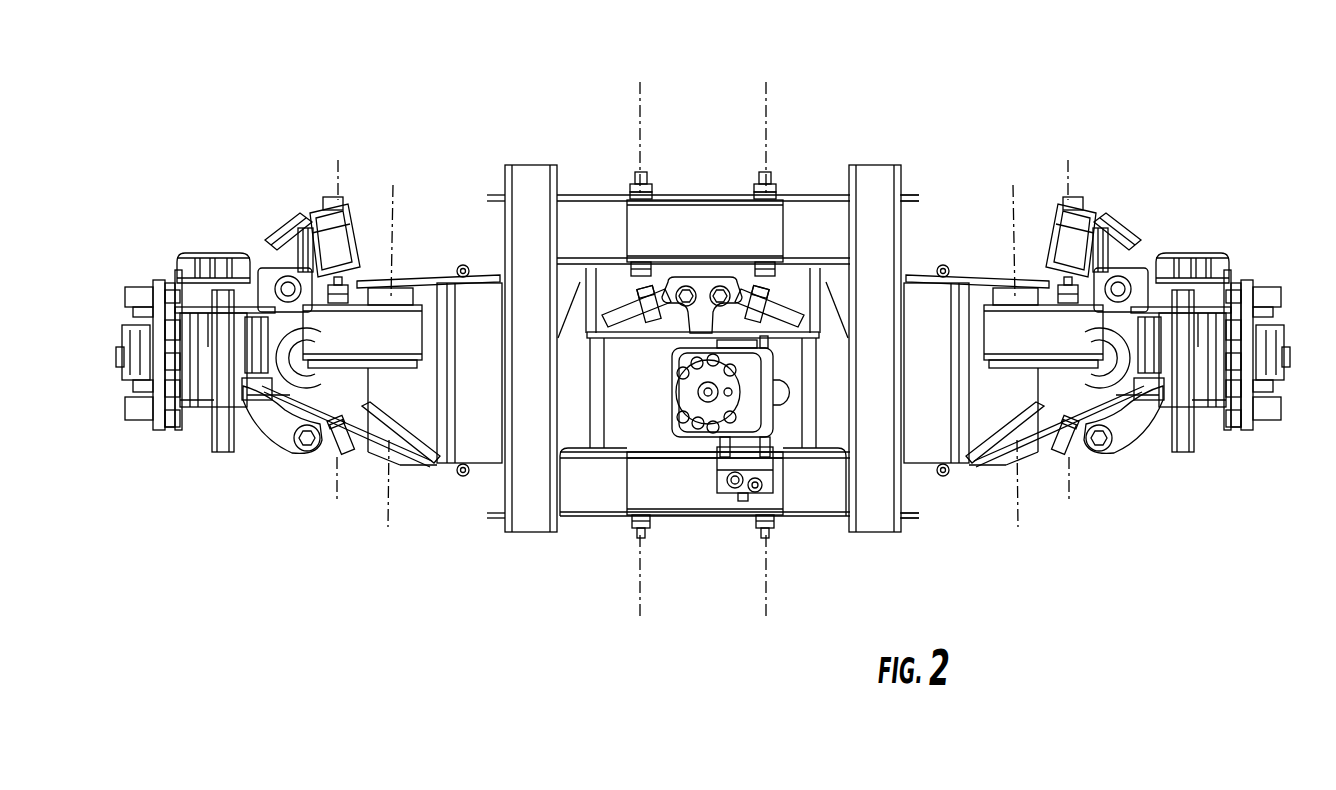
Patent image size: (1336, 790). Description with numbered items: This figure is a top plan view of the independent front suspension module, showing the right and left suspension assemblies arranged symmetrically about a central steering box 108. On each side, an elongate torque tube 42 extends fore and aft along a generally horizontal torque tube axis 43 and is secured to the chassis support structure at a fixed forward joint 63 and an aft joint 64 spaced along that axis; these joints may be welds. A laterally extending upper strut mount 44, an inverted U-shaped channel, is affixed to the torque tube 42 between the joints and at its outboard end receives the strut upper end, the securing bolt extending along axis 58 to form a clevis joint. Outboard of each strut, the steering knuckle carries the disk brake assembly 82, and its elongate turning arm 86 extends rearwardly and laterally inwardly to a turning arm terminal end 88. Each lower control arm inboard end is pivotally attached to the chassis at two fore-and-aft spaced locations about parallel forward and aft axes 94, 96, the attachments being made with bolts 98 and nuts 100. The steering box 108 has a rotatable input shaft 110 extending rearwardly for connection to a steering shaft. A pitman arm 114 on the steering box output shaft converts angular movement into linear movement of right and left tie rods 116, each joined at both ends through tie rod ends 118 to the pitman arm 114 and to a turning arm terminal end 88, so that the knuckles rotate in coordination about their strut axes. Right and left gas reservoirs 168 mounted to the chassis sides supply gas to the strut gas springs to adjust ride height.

The torque tube 42 is at (1008, 420).
The torque tube axis 43 is at (395, 190).
The upper strut mount 44 is at (1013, 332).
The bolt axis 58 is at (338, 185).
The forward joint 63 is at (402, 280).
The aft joint 64 is at (413, 447).
The disk brake assembly 82 is at (138, 256).
The turning arm 86 is at (1132, 423).
The turning arm terminal end 88 is at (1098, 450).
The forward axis 94 is at (640, 108).
The aft axis 96 is at (640, 580).
The bolts 98 is at (633, 176).
The nuts 100 is at (752, 187).
The steering box 108 is at (660, 418).
The input shaft 110 is at (740, 507).
The pitman arm 114 is at (702, 292).
The tie rods 116 is at (620, 316).
The tie rod ends 118 is at (660, 298).
The gas reservoir 168 is at (480, 447).